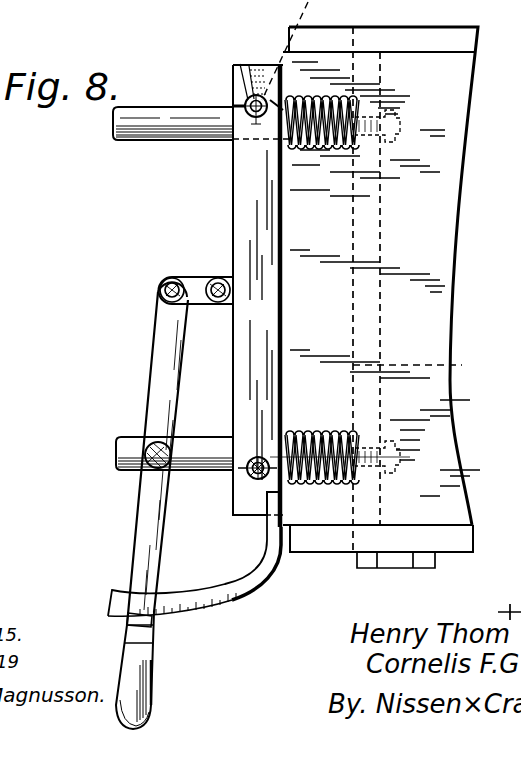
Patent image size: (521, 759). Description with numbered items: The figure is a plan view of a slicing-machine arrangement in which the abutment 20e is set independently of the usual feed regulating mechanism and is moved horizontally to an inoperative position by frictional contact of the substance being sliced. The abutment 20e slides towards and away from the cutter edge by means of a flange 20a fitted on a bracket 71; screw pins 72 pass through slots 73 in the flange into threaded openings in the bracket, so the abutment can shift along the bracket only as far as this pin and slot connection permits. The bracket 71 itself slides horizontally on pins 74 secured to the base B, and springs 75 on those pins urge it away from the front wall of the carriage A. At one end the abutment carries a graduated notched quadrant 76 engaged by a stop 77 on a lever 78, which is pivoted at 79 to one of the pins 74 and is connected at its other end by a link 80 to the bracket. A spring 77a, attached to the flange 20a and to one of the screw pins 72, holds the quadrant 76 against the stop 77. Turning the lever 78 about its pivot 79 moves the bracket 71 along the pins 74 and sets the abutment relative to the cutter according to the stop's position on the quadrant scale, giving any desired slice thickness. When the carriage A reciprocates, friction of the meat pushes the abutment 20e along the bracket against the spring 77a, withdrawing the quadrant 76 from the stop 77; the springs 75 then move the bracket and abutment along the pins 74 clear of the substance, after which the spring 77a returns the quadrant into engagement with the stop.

The carriage A is at (437, 260).
The base B is at (462, 365).
The flange of the abutment 20a is at (280, 182).
The abutment 20e is at (283, 400).
The bracket 71 is at (232, 283).
The screw pins 72 is at (249, 60).
The slots 73 is at (250, 110).
The pins 74 is at (190, 140).
The springs 75 is at (330, 152).
The graduated notched quadrant 76 is at (254, 583).
The stop 77 is at (132, 622).
The spring 77a is at (285, 50).
The lever 78 is at (142, 563).
The pivot 79 is at (145, 465).
The link 80 is at (207, 304).